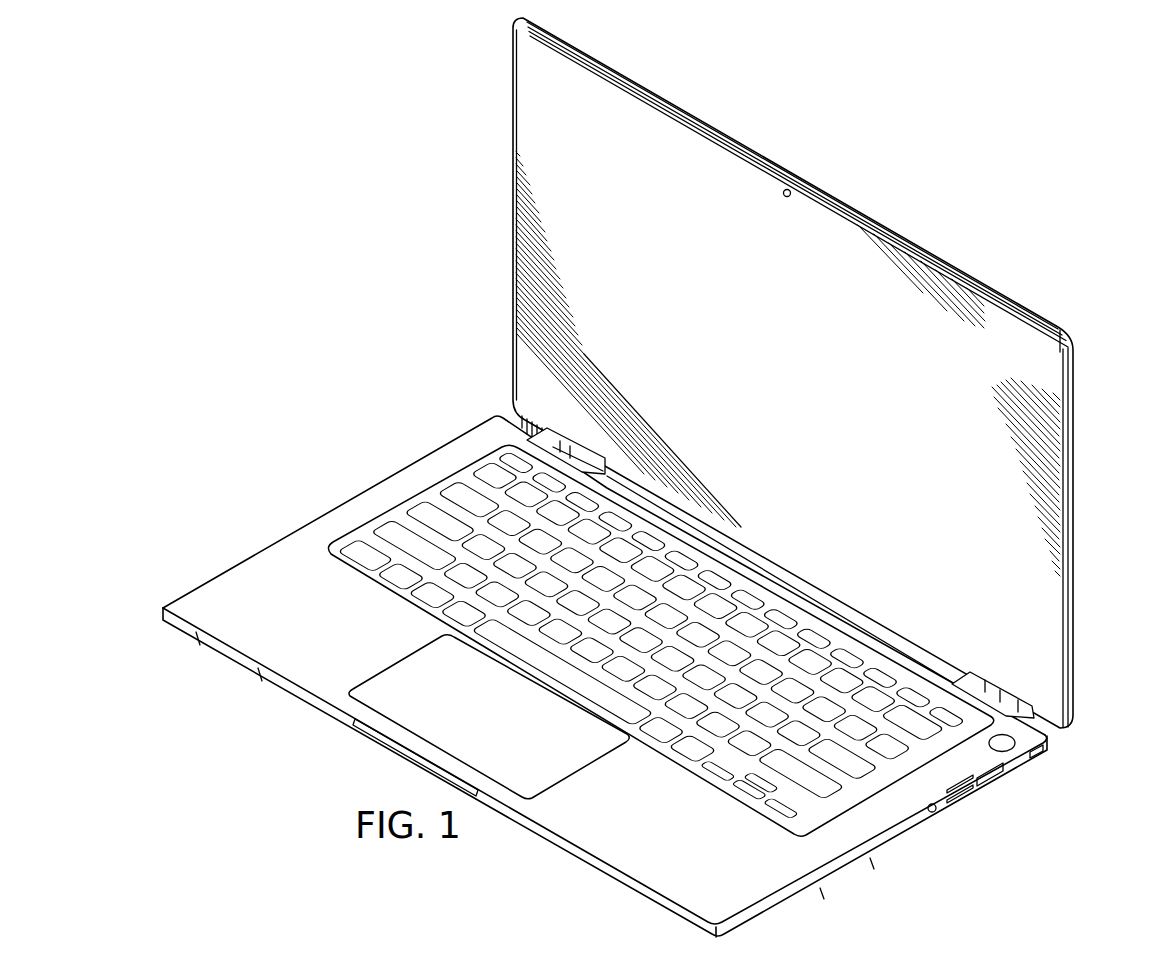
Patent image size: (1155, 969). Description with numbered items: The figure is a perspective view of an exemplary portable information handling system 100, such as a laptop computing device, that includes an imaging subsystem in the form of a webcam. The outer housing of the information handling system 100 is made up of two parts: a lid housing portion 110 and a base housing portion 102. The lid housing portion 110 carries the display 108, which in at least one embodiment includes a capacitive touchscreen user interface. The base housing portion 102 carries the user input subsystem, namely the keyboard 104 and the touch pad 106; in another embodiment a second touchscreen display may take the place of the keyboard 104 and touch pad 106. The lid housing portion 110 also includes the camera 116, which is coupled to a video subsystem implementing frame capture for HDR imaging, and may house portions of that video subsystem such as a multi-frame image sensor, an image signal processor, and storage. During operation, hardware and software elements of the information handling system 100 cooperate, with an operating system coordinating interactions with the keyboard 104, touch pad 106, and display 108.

The information handling system 100 is at (266, 163).
The base housing portion 102 is at (876, 840).
The keyboard 104 is at (420, 497).
The touch pad 106 is at (400, 672).
The display 108 is at (522, 93).
The lid housing portion 110 is at (1065, 606).
The camera 116 is at (784, 196).